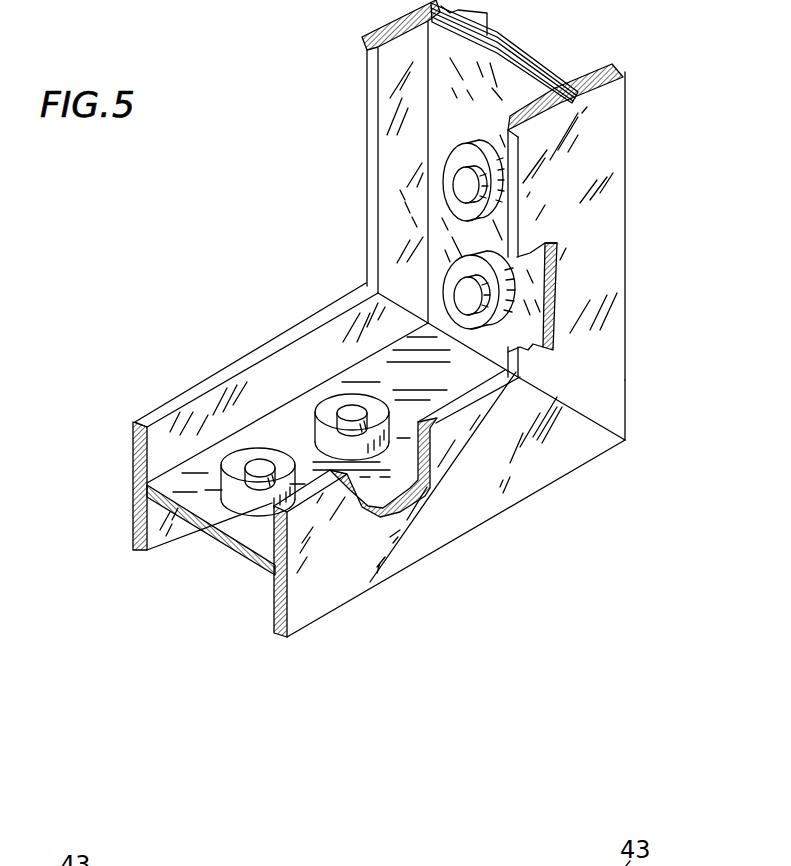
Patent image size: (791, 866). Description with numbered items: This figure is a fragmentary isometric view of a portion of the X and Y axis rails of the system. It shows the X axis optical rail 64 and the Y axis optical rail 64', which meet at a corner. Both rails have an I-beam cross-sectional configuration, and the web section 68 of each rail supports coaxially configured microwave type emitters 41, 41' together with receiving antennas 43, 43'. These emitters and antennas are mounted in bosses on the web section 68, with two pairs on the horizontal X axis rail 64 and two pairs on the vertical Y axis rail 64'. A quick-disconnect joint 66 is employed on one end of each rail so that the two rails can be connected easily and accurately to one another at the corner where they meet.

The microwave type emitter 41 is at (395, 382).
The microwave type emitter 41' is at (360, 274).
The receiving antenna 43 is at (327, 388).
The receiving antenna 43' is at (443, 299).
The X axis optical rail 64 is at (449, 503).
The Y axis optical rail 64' is at (536, 252).
The quick-disconnect joint 66 is at (627, 437).
The web section 68 is at (292, 430).